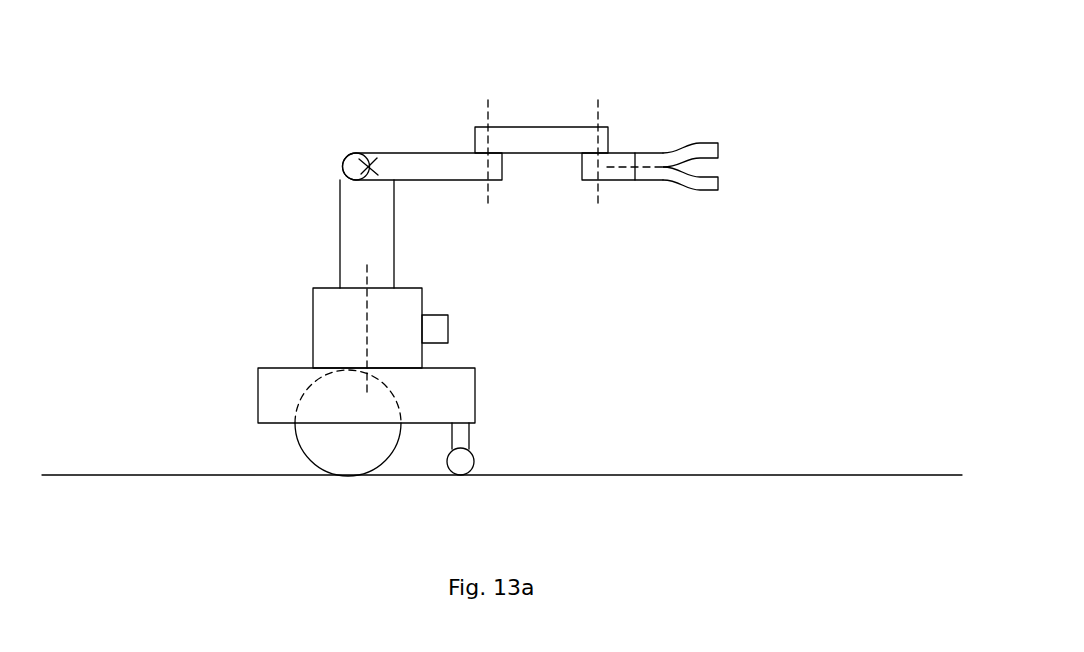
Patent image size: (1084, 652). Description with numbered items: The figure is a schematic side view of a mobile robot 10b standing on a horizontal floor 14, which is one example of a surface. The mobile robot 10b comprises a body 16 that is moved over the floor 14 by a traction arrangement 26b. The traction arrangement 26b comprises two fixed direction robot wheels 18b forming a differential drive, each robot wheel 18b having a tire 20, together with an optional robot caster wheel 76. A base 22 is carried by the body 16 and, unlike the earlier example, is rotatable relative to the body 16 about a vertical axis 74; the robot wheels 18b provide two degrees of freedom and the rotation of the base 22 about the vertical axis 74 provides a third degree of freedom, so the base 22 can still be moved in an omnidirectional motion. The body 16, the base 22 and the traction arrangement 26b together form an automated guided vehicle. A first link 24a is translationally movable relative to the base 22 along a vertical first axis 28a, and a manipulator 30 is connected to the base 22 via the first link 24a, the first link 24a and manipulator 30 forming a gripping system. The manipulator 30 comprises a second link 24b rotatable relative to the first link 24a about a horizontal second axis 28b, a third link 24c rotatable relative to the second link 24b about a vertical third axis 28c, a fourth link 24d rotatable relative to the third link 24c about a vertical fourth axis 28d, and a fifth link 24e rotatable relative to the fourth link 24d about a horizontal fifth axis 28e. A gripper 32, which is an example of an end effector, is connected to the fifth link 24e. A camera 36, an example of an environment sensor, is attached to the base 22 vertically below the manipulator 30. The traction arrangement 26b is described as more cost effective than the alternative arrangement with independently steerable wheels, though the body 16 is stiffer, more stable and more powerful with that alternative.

The mobile robot 10b is at (298, 69).
The floor 14 is at (658, 475).
The body 16 is at (465, 409).
The fixed direction robot wheel 18b is at (342, 447).
The tire 20 is at (390, 465).
The base 22 is at (408, 329).
The first link 24a is at (355, 233).
The second link 24b is at (408, 167).
The third link 24c is at (540, 140).
The fourth link 24d is at (618, 160).
The fifth link 24e is at (648, 162).
The traction arrangement 26b is at (504, 454).
The first axis 28a is at (368, 280).
The second axis 28b is at (347, 158).
The third axis 28c is at (490, 202).
The fourth axis 28d is at (598, 203).
The fifth axis 28e is at (623, 167).
The manipulator 30 is at (474, 69).
The gripper 32 is at (707, 150).
The camera 36 is at (433, 327).
The vertical axis 74 is at (365, 357).
The robot caster wheel 76 is at (462, 465).